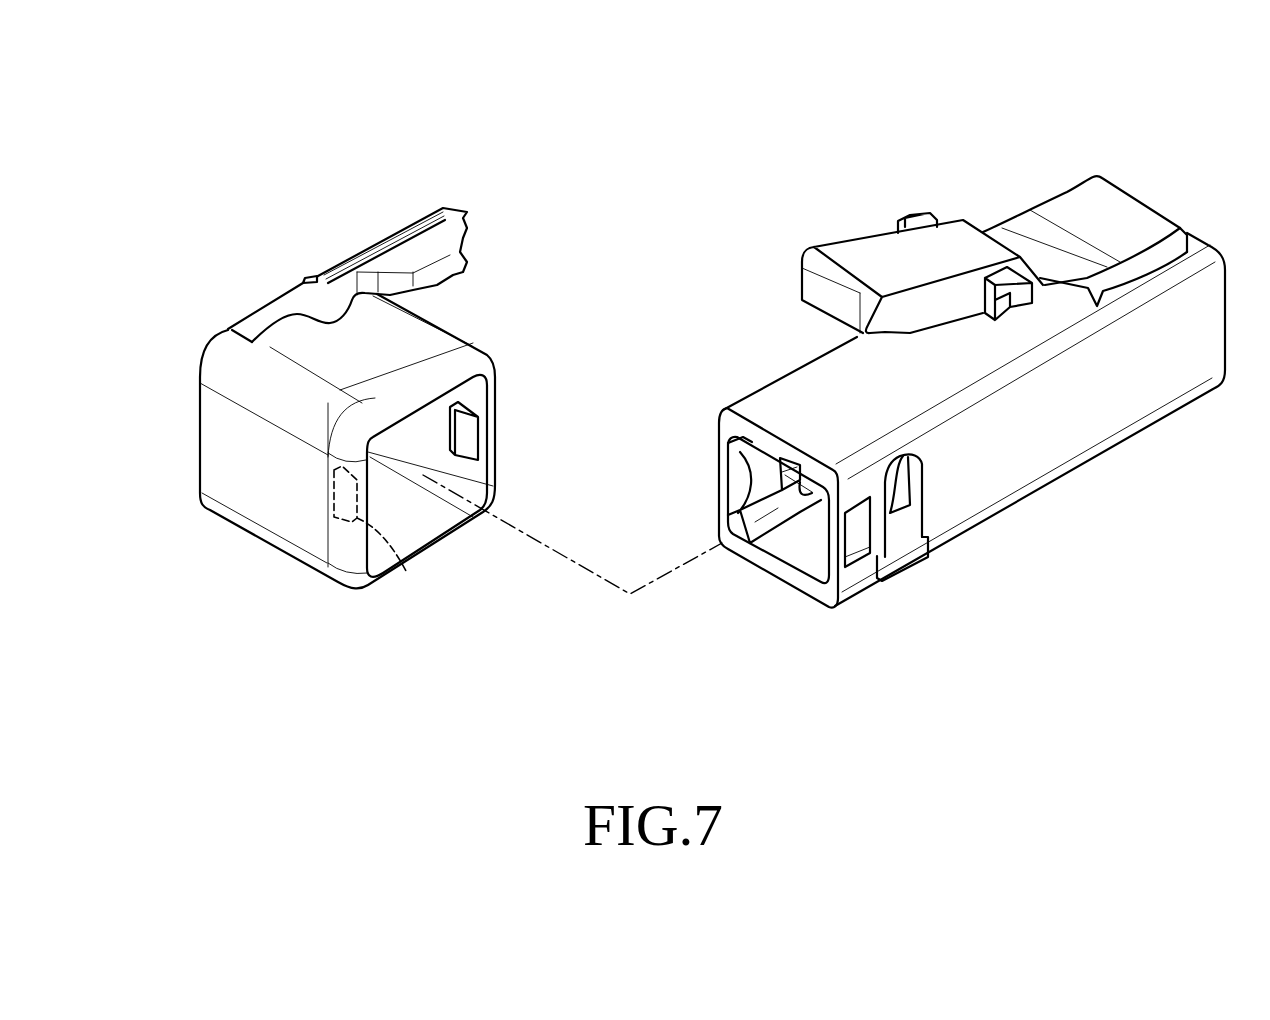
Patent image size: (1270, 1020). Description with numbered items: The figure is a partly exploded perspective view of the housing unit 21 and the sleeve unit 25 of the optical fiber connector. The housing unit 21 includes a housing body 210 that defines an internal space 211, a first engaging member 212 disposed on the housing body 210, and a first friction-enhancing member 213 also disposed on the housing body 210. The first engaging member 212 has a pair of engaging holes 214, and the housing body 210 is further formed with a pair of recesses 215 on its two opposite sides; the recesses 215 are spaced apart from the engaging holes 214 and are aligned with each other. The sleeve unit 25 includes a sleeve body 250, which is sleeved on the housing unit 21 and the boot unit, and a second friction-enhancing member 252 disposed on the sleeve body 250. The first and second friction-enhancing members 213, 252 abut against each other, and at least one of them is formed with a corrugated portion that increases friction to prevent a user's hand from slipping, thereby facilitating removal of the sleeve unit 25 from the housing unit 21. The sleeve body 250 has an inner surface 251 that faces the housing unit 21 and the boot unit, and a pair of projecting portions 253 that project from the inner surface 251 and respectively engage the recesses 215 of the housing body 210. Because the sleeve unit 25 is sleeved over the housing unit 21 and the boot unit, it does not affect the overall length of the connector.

The sleeve unit 25 is at (220, 218).
The sleeve body 250 is at (268, 507).
The inner surface 251 is at (413, 510).
The second friction-enhancing member 252 is at (396, 237).
The projecting portions 253 is at (464, 436).
The housing unit 21 is at (953, 162).
The housing body 210 is at (1147, 400).
The internal space 211 is at (797, 547).
The first engaging member 212 is at (934, 616).
The first friction-enhancing member 213 is at (873, 253).
The engaging holes 214 is at (790, 472).
The recesses 215 is at (738, 475).